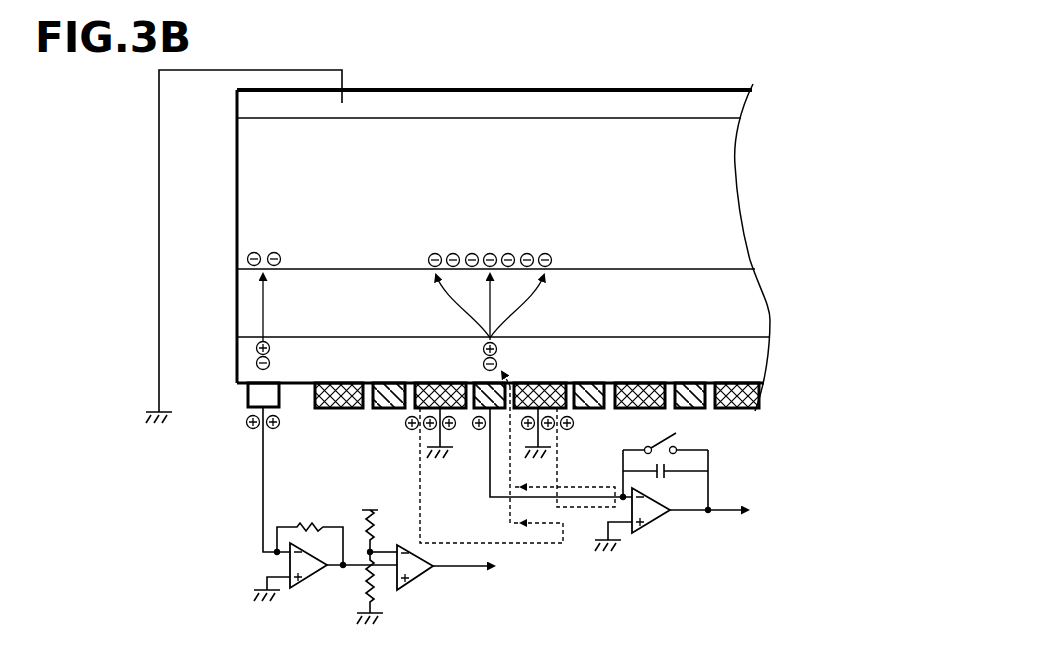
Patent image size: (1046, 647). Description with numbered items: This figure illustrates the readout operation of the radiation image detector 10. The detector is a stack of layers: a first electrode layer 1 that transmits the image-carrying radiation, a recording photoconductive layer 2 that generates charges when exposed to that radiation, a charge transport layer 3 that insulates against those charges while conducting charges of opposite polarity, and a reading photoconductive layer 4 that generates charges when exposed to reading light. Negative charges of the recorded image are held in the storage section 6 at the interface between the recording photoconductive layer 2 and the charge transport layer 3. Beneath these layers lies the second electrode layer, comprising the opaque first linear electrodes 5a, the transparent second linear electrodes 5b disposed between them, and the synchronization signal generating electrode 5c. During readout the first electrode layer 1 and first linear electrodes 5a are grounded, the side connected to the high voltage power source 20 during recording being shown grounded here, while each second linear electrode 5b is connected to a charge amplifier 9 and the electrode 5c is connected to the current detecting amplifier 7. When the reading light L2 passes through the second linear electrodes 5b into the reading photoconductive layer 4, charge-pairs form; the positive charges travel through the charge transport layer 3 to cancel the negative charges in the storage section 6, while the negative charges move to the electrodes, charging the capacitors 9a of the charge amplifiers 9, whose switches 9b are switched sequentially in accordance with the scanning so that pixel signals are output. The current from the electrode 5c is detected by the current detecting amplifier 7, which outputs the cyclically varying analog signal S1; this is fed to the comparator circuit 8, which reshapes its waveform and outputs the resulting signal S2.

The first electrode layer 1 is at (247, 98).
The recording photoconductive layer 2 is at (247, 206).
The charge transport layer 3 is at (248, 313).
The reading photoconductive layer 4 is at (248, 363).
The first linear electrodes 5a is at (340, 390).
The second linear electrodes 5b is at (389, 398).
The synchronization signal generating electrode 5c is at (249, 406).
The storage section 6 is at (241, 260).
The current detecting amplifier 7 is at (311, 577).
The comparator circuit 8 is at (417, 575).
The charge amplifiers 9 is at (650, 518).
The capacitors 9a is at (662, 483).
The switches 9b is at (680, 432).
The radiation image detector 10 is at (764, 91).
The high voltage power source 20 is at (158, 245).
The signal S1 is at (357, 565).
The output signal S2 is at (517, 571).
The reading light L2 is at (285, 438).